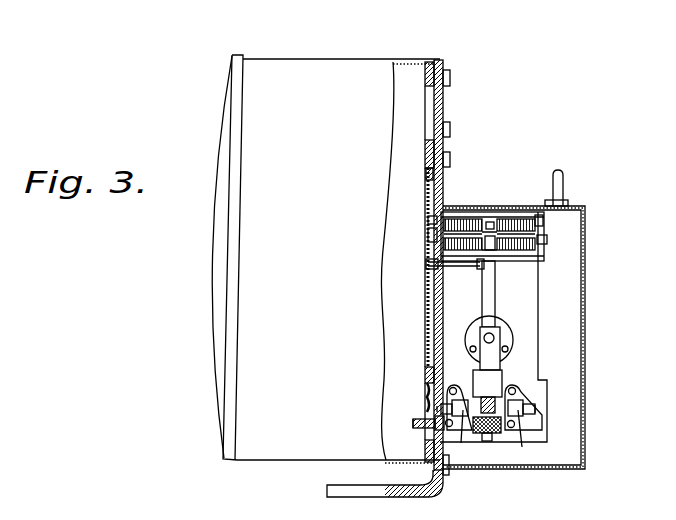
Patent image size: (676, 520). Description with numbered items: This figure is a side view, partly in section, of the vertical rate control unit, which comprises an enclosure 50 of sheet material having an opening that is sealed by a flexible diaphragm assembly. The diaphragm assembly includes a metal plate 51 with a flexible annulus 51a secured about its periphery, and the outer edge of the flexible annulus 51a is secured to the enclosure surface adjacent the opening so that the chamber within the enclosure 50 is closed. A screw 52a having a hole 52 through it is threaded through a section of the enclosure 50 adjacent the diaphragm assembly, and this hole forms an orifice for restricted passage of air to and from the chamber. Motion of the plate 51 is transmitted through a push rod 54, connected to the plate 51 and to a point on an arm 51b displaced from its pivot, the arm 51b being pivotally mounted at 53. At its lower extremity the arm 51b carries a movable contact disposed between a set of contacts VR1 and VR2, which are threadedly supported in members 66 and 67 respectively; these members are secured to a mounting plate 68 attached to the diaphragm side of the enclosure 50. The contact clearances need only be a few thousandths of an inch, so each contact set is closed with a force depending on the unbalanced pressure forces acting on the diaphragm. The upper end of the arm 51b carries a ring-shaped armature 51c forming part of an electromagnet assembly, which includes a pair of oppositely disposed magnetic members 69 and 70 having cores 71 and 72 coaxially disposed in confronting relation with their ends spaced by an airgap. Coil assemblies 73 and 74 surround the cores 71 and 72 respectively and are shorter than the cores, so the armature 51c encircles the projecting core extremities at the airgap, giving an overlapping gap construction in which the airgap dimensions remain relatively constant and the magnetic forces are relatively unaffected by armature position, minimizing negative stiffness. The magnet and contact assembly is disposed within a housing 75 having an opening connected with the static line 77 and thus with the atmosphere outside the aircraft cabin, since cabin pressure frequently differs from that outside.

The enclosure 50 is at (306, 42).
The metal plate 51 is at (428, 301).
The flexible annulus 51a is at (431, 173).
The arm 51b is at (494, 300).
The armature 51c is at (495, 222).
The hole 52 is at (412, 423).
The screw 52a is at (421, 416).
The pivot 53 is at (497, 338).
The push rod 54 is at (452, 268).
The member 66 is at (461, 443).
The member 67 is at (528, 435).
The mounting plate 68 is at (539, 351).
The magnetic member 69 is at (460, 215).
The magnetic member 70 is at (517, 220).
The core 71 is at (437, 239).
The core 72 is at (543, 239).
The coil assembly 73 is at (441, 220).
The coil assembly 74 is at (540, 225).
The housing 75 is at (555, 465).
The static line 77 is at (562, 186).
The contact VR1 is at (468, 384).
The contact VR2 is at (512, 386).